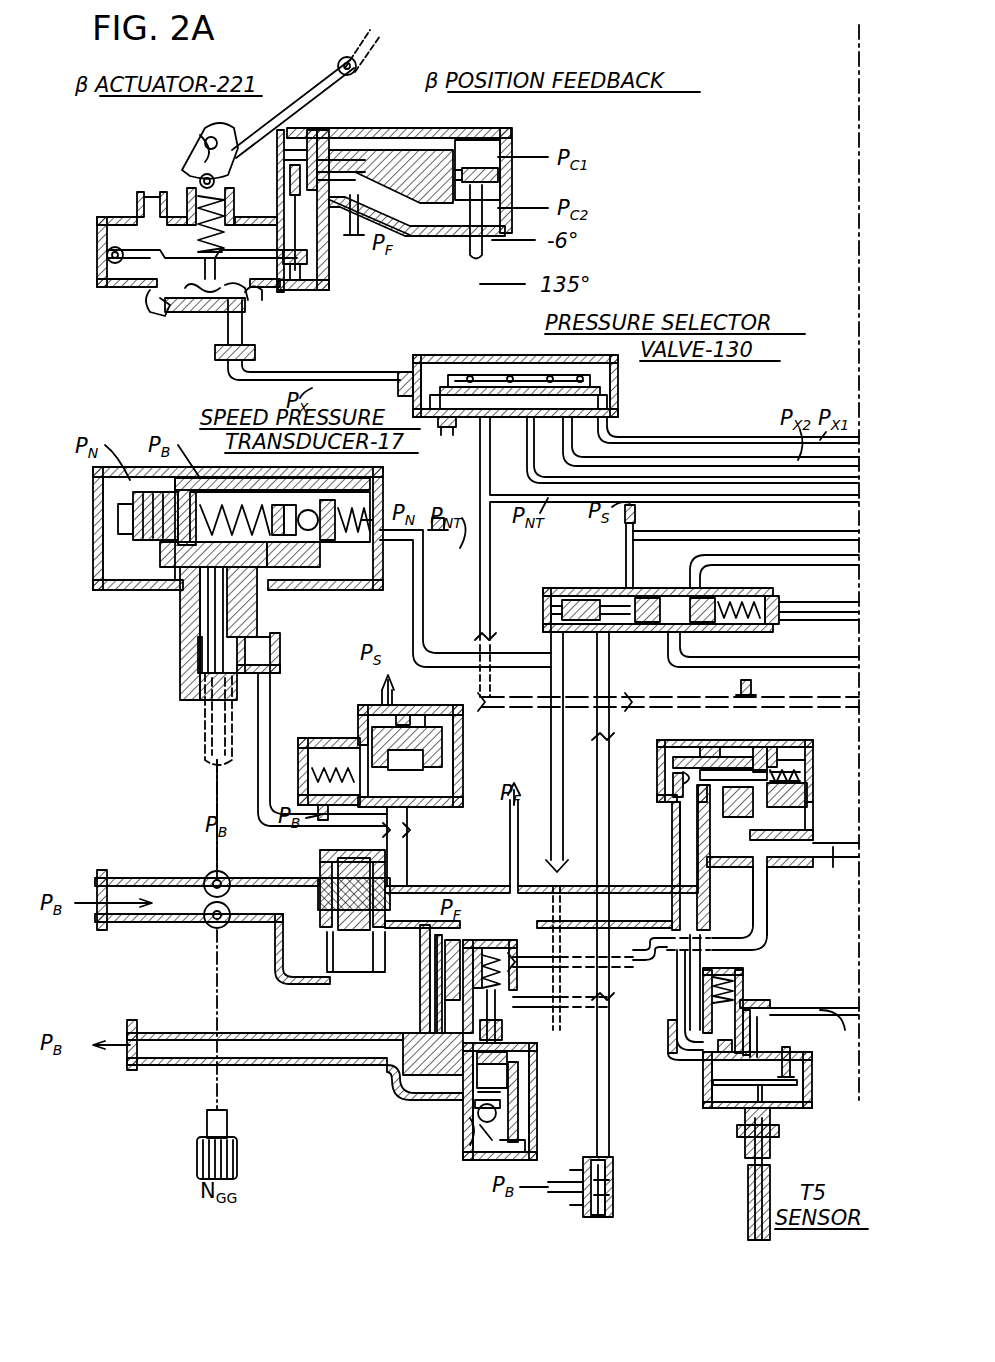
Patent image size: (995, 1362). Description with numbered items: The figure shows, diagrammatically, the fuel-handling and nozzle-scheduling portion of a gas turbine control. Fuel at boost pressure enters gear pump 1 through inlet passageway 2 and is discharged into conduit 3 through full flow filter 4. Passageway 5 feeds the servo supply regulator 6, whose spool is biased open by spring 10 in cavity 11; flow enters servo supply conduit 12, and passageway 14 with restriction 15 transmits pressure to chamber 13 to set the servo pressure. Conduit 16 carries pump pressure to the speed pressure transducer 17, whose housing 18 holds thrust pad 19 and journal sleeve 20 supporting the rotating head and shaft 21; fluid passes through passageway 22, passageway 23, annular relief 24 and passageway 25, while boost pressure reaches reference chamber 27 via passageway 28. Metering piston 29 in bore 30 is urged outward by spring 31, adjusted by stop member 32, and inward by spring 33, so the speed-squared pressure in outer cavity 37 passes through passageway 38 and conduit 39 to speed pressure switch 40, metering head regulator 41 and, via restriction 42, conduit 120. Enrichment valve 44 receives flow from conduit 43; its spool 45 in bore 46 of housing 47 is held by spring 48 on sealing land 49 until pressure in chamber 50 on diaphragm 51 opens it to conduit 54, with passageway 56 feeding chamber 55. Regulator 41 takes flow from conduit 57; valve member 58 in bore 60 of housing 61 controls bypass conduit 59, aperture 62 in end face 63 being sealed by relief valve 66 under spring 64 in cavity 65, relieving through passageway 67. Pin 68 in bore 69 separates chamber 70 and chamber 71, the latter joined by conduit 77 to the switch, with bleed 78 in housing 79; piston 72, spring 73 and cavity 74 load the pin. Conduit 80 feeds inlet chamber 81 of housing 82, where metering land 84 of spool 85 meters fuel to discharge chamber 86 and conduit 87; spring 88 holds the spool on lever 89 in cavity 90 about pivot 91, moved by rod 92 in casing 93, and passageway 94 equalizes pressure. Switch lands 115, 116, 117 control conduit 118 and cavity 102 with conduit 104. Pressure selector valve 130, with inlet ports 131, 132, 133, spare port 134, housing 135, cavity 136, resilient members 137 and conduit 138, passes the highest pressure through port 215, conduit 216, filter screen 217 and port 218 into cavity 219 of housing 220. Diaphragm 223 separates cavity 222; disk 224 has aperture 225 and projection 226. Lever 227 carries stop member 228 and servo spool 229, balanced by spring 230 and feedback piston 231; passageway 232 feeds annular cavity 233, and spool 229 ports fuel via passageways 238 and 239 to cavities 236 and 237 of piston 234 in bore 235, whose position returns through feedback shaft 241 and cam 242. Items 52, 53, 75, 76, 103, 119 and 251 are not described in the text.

The gear pump 1 is at (210, 928).
The inlet passageway 2 is at (180, 913).
The conduit 3 is at (420, 916).
The full flow filter 4 is at (320, 857).
The passageway 5 is at (413, 855).
The servo supply regulator 6 is at (460, 740).
The helical compression spring 10 is at (312, 775).
The cavity 11 is at (322, 740).
The servo supply conduit 12 is at (390, 700).
The chamber 13 is at (445, 768).
The passageway 14 is at (430, 722).
The fixed area flow restriction 15 is at (410, 715).
The conduit 16 is at (360, 226).
The speed pressure transducer 17 is at (100, 520).
The outer housing 18 is at (270, 490).
The thrust pad 19 is at (292, 492).
The ported journal sleeve 20 is at (203, 620).
The rotating head and shaft 21 is at (180, 598).
The passageway 22 is at (272, 680).
The passageway 23 is at (280, 640).
The annular relief 24 is at (215, 650).
The passageway 25 is at (257, 606).
The reference chamber 27 is at (215, 468).
The passageway 28 is at (205, 760).
The metering piston 29 is at (330, 492).
The axial bore 30 is at (310, 490).
The helical compression spring 31 is at (178, 545).
The spring stop member 32 is at (128, 525).
The helical compression spring 33 is at (365, 490).
The outer cavity 37 is at (105, 495).
The passageway 38 is at (378, 500).
The conduit 39 is at (573, 1022).
The speed pressure switch 40 is at (553, 590).
The metering head pressure regulator and relief valve 41 is at (520, 1152).
The fixed restriction 42 is at (440, 535).
The conduit 43 is at (680, 835).
The enrichment valve 44 is at (813, 752).
The spool 45 is at (735, 770).
The bore 46 is at (723, 800).
The housing 47 is at (698, 847).
The helical compression spring 48 is at (805, 750).
The sealing land 49 is at (683, 778).
The chamber 50 is at (768, 747).
The diaphragm 51 is at (778, 750).
The block 52 is at (668, 760).
The pivot 53 is at (708, 747).
The conduit 54 is at (833, 870).
The chamber 55 is at (805, 783).
The passageway 56 is at (807, 805).
The conduit 57 is at (520, 1125).
The valve member 58 is at (462, 1095).
The bypass conduit 59 is at (255, 1050).
The bore 60 is at (507, 1075).
The housing 61 is at (507, 1058).
The aperture 62 is at (485, 1125).
The valve member end face 63 is at (478, 1110).
The helical compression spring 64 is at (470, 1130).
The cavity 65 is at (518, 1132).
The relief valve 66 is at (482, 1138).
The passageway 67 is at (478, 1100).
The pin 68 is at (433, 1030).
The bore 69 is at (497, 1020).
The chamber 70 is at (503, 1035).
The chamber 71 is at (460, 1010).
The piston 72 is at (460, 990).
The helical compression spring 73 is at (505, 952).
The cavity 74 is at (478, 952).
The passage 75 is at (608, 958).
The passage 76 is at (550, 955).
The conduit 77 is at (615, 660).
The manually adjustable bleed 78 is at (612, 1187).
The housing 79 is at (615, 1165).
The conduit 80 is at (372, 478).
The inlet chamber 81 is at (672, 1058).
The housing 82 is at (668, 1045).
The variable area metering land 84 is at (752, 1001).
The valve spool 85 is at (715, 1050).
The discharge chamber 86 is at (825, 1025).
The conduit 87 is at (840, 990).
The compression spring 88 is at (744, 978).
The lever 89 is at (730, 1075).
The cavity 90 is at (718, 1085).
The adjustable pivot member 91 is at (795, 1060).
The rod 92 is at (812, 1082).
The casing 93 is at (745, 1148).
The passageway 94 is at (760, 1037).
The cavity 102 is at (772, 595).
The passage 103 is at (790, 606).
The conduit 104 is at (790, 622).
The land 115 is at (598, 596).
The land 116 is at (648, 596).
The land 117 is at (710, 597).
The conduit 118 is at (708, 531).
The passage 119 is at (765, 563).
The conduit 120 is at (675, 495).
The pressure selector valve 130 is at (515, 386).
The inlet port 131 is at (480, 440).
The inlet port 132 is at (540, 420).
The inlet port 133 is at (600, 420).
The spare port 134 is at (445, 428).
The housing 135 is at (614, 380).
The cavity 136 is at (438, 365).
The resilient valve members 137 is at (505, 373).
The conduit 138 is at (660, 465).
The port 215 is at (402, 370).
The conduit 216 is at (238, 382).
The filter screen 217 is at (256, 360).
The port 218 is at (250, 340).
The cavity 219 is at (175, 305).
The housing 220 is at (100, 288).
The cavity 222 is at (138, 212).
The diaphragm 223 is at (150, 300).
The disk 224 is at (200, 300).
The flow restrictive aperture 225 is at (230, 300).
The projection 226 is at (230, 258).
The lever 227 is at (110, 265).
The stop member 228 is at (310, 290).
The servo spool 229 is at (290, 138).
The spring 230 is at (200, 240).
The position feedback piston 231 is at (220, 190).
The passageway 232 is at (345, 160).
The annular cavity 233 is at (290, 157).
The differential area piston 234 is at (500, 178).
The bore 235 is at (512, 138).
The large area variable volume cavity 236 is at (482, 140).
The small area variable volume cavity 237 is at (455, 205).
The passageway 238 is at (400, 150).
The passageway 239 is at (415, 230).
The nozzle position feedback shaft 241 is at (338, 60).
The cam 242 is at (190, 160).
The orifice 251 is at (640, 512).